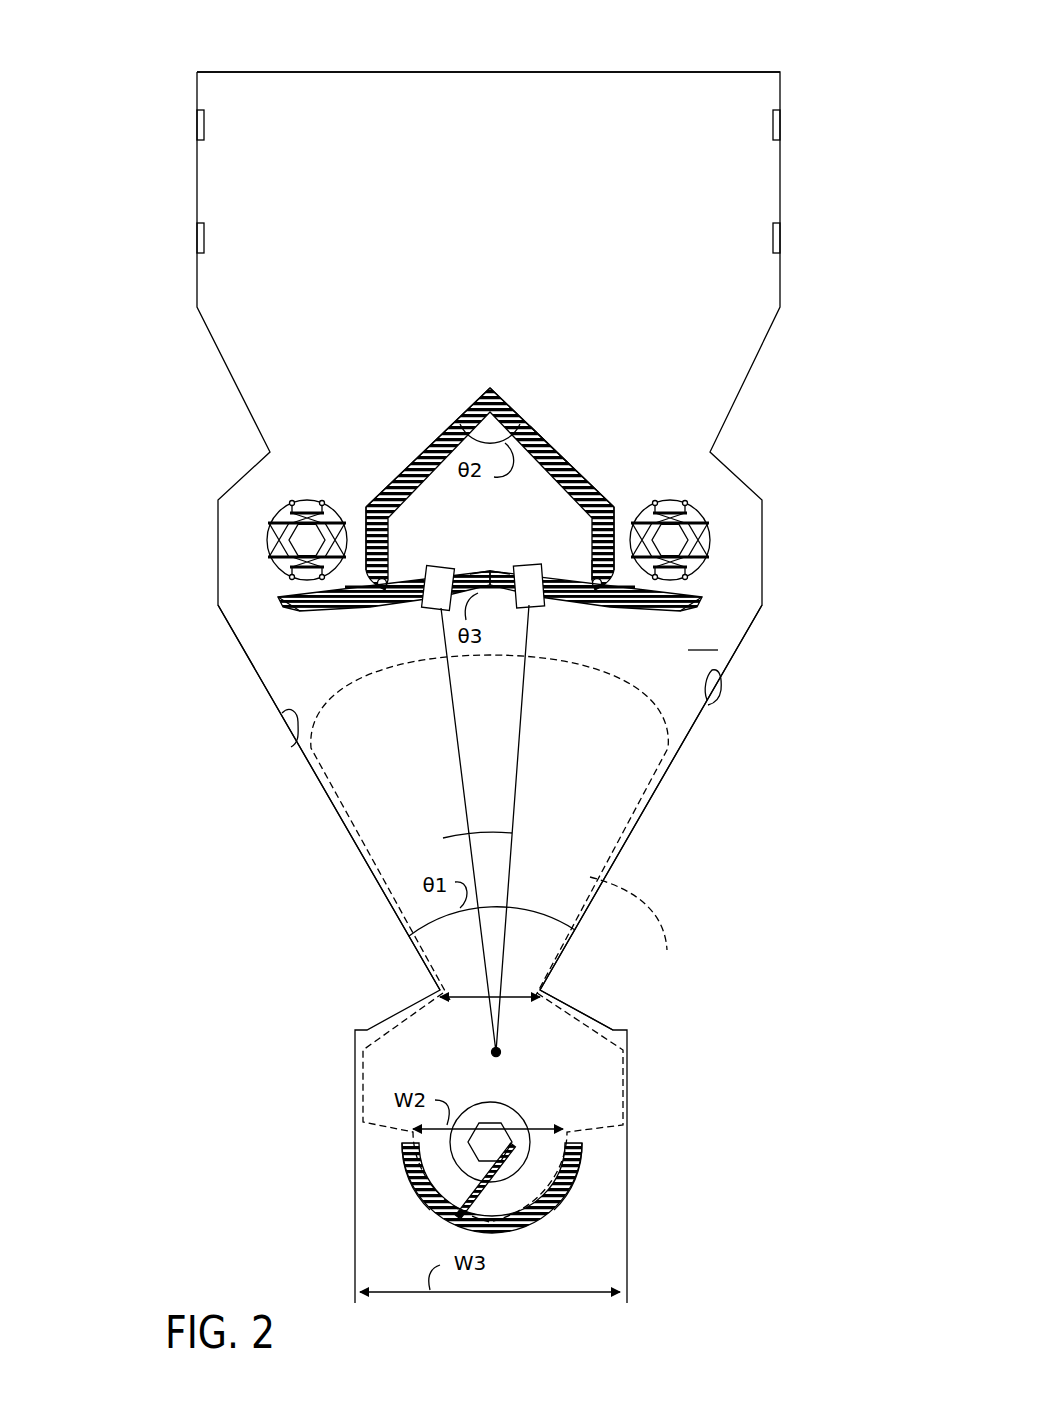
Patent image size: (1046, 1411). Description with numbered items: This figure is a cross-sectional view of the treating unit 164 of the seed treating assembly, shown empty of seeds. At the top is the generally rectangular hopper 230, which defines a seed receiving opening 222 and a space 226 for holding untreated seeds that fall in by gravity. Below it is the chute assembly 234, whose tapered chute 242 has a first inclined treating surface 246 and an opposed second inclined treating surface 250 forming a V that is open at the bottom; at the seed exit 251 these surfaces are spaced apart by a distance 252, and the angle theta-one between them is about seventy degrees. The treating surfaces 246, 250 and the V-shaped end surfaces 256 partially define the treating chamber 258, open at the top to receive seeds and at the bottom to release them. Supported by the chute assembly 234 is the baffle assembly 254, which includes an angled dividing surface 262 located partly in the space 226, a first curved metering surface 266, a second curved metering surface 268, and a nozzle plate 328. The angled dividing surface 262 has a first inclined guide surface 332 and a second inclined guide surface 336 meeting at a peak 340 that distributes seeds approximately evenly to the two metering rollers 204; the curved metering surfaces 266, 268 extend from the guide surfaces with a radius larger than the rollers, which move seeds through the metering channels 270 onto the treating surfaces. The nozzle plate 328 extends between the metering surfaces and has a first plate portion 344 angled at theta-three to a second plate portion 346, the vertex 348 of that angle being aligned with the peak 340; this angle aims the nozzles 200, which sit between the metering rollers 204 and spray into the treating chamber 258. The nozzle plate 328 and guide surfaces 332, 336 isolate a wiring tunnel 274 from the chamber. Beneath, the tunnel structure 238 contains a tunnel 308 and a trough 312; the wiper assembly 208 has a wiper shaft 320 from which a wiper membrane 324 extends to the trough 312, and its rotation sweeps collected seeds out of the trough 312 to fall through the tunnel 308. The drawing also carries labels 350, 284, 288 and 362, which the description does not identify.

The treating unit 164 is at (834, 104).
The seed receiving opening 222 is at (258, 70).
The space 226 is at (218, 174).
The hopper 230 is at (783, 238).
The chute assembly 234 is at (834, 681).
The second inclined treating surface 250 is at (297, 704).
The first inclined treating surface 246 is at (720, 677).
The tapered chute 242 is at (647, 808).
The treating chamber 258 is at (635, 928).
The V-shaped end surfaces 256 is at (703, 637).
The peak 340 is at (488, 388).
The baffle assembly 254 is at (538, 392).
The angled dividing surface 262 is at (460, 415).
The second inclined guide surface 336 is at (410, 462).
The first inclined guide surface 332 is at (557, 452).
The first curved metering surface 266 is at (613, 548).
The second curved metering surface 268 is at (366, 522).
The roller 350 is at (306, 540).
The metering rollers 204 is at (267, 545).
The first plate portion 344 is at (326, 614).
The second plate portion 346 is at (654, 618).
The nozzle plate 328 is at (408, 616).
The vertex 348 is at (493, 592).
The wiring tunnel 274 is at (559, 539).
The metering channels 270 is at (263, 583).
The nozzles 200 is at (433, 568).
The nozzle axis 284 is at (462, 812).
The convergence point 288 is at (492, 1052).
The distance 252 is at (477, 995).
The seed exit 251 is at (515, 981).
The tunnel structure 238 is at (627, 1187).
The tunnel 308 is at (372, 1226).
The trough 312 is at (410, 1188).
The wiper assembly 208 is at (539, 1187).
The wiper shaft 320 is at (500, 1105).
The auger shaft 362 is at (490, 1140).
The wiper membrane 324 is at (493, 1203).